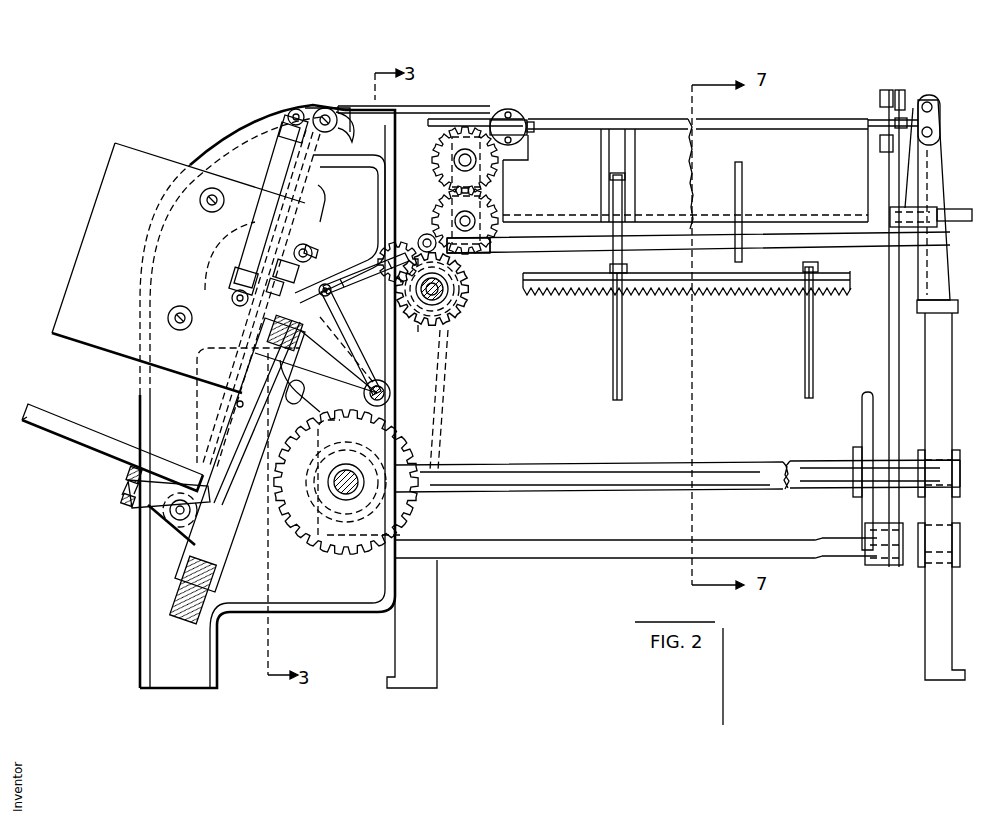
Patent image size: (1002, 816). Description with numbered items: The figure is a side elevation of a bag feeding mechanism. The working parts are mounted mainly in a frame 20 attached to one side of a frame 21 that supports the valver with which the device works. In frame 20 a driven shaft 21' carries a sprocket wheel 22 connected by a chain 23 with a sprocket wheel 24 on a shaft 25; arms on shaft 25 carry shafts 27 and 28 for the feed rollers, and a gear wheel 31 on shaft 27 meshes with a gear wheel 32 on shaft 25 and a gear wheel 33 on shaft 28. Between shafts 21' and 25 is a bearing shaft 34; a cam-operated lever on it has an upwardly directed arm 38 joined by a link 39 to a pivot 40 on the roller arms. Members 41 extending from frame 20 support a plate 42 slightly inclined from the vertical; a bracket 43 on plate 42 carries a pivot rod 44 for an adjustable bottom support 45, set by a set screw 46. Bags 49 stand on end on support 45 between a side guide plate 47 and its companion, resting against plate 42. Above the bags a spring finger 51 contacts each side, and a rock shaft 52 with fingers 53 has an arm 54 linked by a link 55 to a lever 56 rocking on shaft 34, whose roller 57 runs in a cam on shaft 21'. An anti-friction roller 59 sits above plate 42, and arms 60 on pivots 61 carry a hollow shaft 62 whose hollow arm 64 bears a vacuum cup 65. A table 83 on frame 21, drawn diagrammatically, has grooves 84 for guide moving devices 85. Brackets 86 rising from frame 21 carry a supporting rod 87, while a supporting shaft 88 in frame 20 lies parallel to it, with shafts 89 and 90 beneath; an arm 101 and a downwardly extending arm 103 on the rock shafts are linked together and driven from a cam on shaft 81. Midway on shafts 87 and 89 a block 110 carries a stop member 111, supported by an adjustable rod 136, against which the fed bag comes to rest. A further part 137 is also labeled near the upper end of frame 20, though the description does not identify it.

The frame 20 is at (313, 607).
The frame 21 is at (676, 500).
The shaft 21' is at (347, 501).
The sprocket wheel 22 is at (346, 494).
The chain 23 is at (437, 393).
The sprocket wheel 24 is at (418, 338).
The shaft 25 is at (440, 297).
The shaft 27 is at (477, 223).
The shaft 28 is at (460, 160).
The gear wheel 31 is at (494, 235).
The gear wheel 32 is at (470, 287).
The gear wheel 33 is at (505, 165).
The bearing shaft 34 is at (390, 393).
The upwardly directed arm 38 is at (340, 317).
The link 39 is at (395, 257).
The pivot 40 is at (425, 240).
The members 41 is at (197, 614).
The plate 42 is at (258, 408).
The bracket 43 is at (153, 510).
The pivot rod 44 is at (180, 520).
The adjustable bottom support 45 is at (78, 443).
The set screw 46 is at (123, 500).
The side guide plate 47 is at (92, 237).
The bags 49 is at (243, 400).
The spring finger 51 is at (347, 132).
The rock shaft 52 is at (333, 117).
The fingers 53 is at (343, 113).
The arm 54 is at (300, 115).
The link 55 is at (283, 160).
The lever 56 is at (236, 306).
The roller 57 is at (410, 510).
The anti-friction roller 59 is at (332, 270).
The arms 60 is at (313, 243).
The pivots 61 is at (287, 273).
The shaft 62 is at (313, 253).
The hollow arm 64 is at (315, 212).
The vacuum cup 65 is at (313, 186).
The shaft 81 is at (607, 470).
The table 83 is at (707, 290).
The grooves 84 is at (838, 306).
The guide moving devices 85 is at (627, 325).
The brackets 86 is at (951, 206).
The supporting rod 87 is at (935, 107).
The supporting shaft 88 is at (510, 113).
The shaft 89 is at (938, 132).
The shaft 90 is at (513, 138).
The arm 101 is at (905, 100).
The downwardly extending arm 103 is at (880, 105).
The block 110 is at (905, 172).
The stop member 111 is at (745, 222).
The rod 136 is at (950, 213).
The rod 137 is at (457, 120).